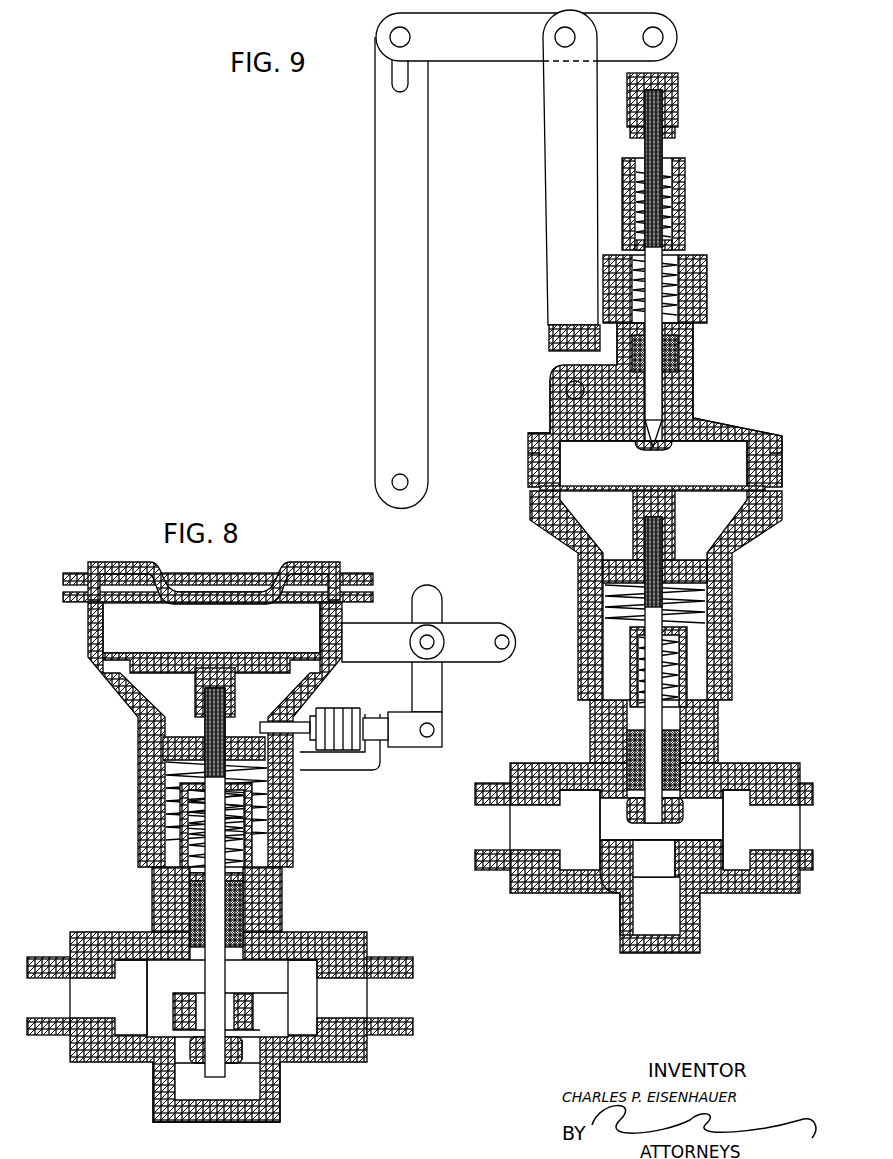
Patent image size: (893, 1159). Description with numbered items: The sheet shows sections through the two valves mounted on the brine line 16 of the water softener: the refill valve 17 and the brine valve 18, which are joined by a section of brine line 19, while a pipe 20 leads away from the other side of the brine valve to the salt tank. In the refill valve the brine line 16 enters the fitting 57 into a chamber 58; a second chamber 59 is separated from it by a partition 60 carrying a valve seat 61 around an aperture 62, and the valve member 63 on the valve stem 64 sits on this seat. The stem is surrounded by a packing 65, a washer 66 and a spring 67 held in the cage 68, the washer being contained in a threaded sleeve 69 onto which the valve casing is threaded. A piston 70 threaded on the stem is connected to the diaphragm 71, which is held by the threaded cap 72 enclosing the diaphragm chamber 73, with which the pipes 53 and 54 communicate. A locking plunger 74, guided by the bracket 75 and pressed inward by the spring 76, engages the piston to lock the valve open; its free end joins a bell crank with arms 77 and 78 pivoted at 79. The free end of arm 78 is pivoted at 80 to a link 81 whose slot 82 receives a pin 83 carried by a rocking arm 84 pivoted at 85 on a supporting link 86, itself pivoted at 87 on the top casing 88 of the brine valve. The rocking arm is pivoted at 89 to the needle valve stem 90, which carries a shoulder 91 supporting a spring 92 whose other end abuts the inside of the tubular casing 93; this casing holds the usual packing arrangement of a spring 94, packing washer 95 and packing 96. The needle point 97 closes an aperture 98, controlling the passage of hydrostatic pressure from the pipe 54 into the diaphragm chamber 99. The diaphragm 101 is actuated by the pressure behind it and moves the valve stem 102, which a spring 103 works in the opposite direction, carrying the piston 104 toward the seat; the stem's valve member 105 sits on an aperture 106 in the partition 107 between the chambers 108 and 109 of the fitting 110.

In FIG. 8, the brine line 16 is at (35, 1037).
In FIG. 8, the refill valve 17 is at (137, 738).
In FIG. 9, the brine valve 18 is at (560, 527).
In FIG. 9, the section of brine line 19 is at (478, 868).
In FIG. 8, the section of brine line 19 is at (405, 1037).
In FIG. 9, the pipe 20 is at (806, 872).
In FIG. 8, the pipe 53 is at (60, 575).
In FIG. 9, the pipe 54 is at (695, 395).
In FIG. 8, the pipe 54 is at (355, 572).
In FIG. 8, the fitting 57 is at (140, 1064).
In FIG. 8, the chamber 58 is at (130, 960).
In FIG. 8, the second chamber 59 is at (300, 960).
In FIG. 8, the partition 60 is at (270, 1018).
In FIG. 8, the valve seat 61 is at (250, 1047).
In FIG. 8, the aperture 62 is at (200, 995).
In FIG. 8, the valve member 63 is at (190, 1050).
In FIG. 8, the valve stem 64 is at (226, 978).
In FIG. 8, the packing 65 is at (195, 905).
In FIG. 8, the washer 66 is at (195, 878).
In FIG. 8, the spring 67 is at (246, 872).
In FIG. 8, the cage 68 is at (262, 815).
In FIG. 8, the threaded sleeve 69 is at (283, 895).
In FIG. 8, the piston 70 is at (165, 757).
In FIG. 8, the diaphragm 71 is at (248, 665).
In FIG. 8, the threaded cap 72 is at (302, 562).
In FIG. 8, the diaphragm chamber 73 is at (233, 605).
In FIG. 8, the locking plunger 74 is at (278, 722).
In FIG. 8, the bracket 75 is at (368, 770).
In FIG. 8, the spring 76 is at (340, 712).
In FIG. 8, the bell crank arm 77 is at (442, 708).
In FIG. 8, the bell crank arm 78 is at (492, 662).
In FIG. 8, the pivot 79 is at (420, 638).
In FIG. 9, the pivot 80 is at (410, 485).
In FIG. 8, the pivot 80 is at (510, 644).
In FIG. 9, the link 81 is at (418, 160).
In FIG. 9, the slot 82 is at (406, 82).
In FIG. 9, the pin 83 is at (412, 40).
In FIG. 9, the rocking arm 84 is at (498, 58).
In FIG. 9, the pivot 85 is at (563, 50).
In FIG. 9, the supporting link 86 is at (545, 130).
In FIG. 9, the pivot 87 is at (566, 398).
In FIG. 9, the top casing 88 is at (528, 437).
In FIG. 9, the pivot 89 is at (665, 44).
In FIG. 9, the valve stem 90 is at (663, 143).
In FIG. 9, the shoulder 91 is at (673, 242).
In FIG. 9, the spring 92 is at (673, 200).
In FIG. 9, the tubular casing 93 is at (686, 176).
In FIG. 9, the spring 94 is at (690, 256).
In FIG. 9, the packing washer 95 is at (694, 332).
In FIG. 9, the packing 96 is at (680, 352).
In FIG. 9, the needle point 97 is at (672, 428).
In FIG. 9, the aperture 98 is at (652, 447).
In FIG. 9, the diaphragm chamber 99 is at (745, 440).
In FIG. 9, the diaphragm 101 is at (700, 486).
In FIG. 9, the valve stem 102 is at (706, 600).
In FIG. 9, the spring 103 is at (688, 640).
In FIG. 9, the piston 104 is at (708, 567).
In FIG. 9, the valve member 105 is at (684, 805).
In FIG. 9, the aperture 106 is at (654, 858).
In FIG. 9, the partition 107 is at (680, 856).
In FIG. 9, the chamber 108 is at (565, 825).
In FIG. 9, the chamber 109 is at (745, 847).
In FIG. 9, the fitting 110 is at (575, 882).